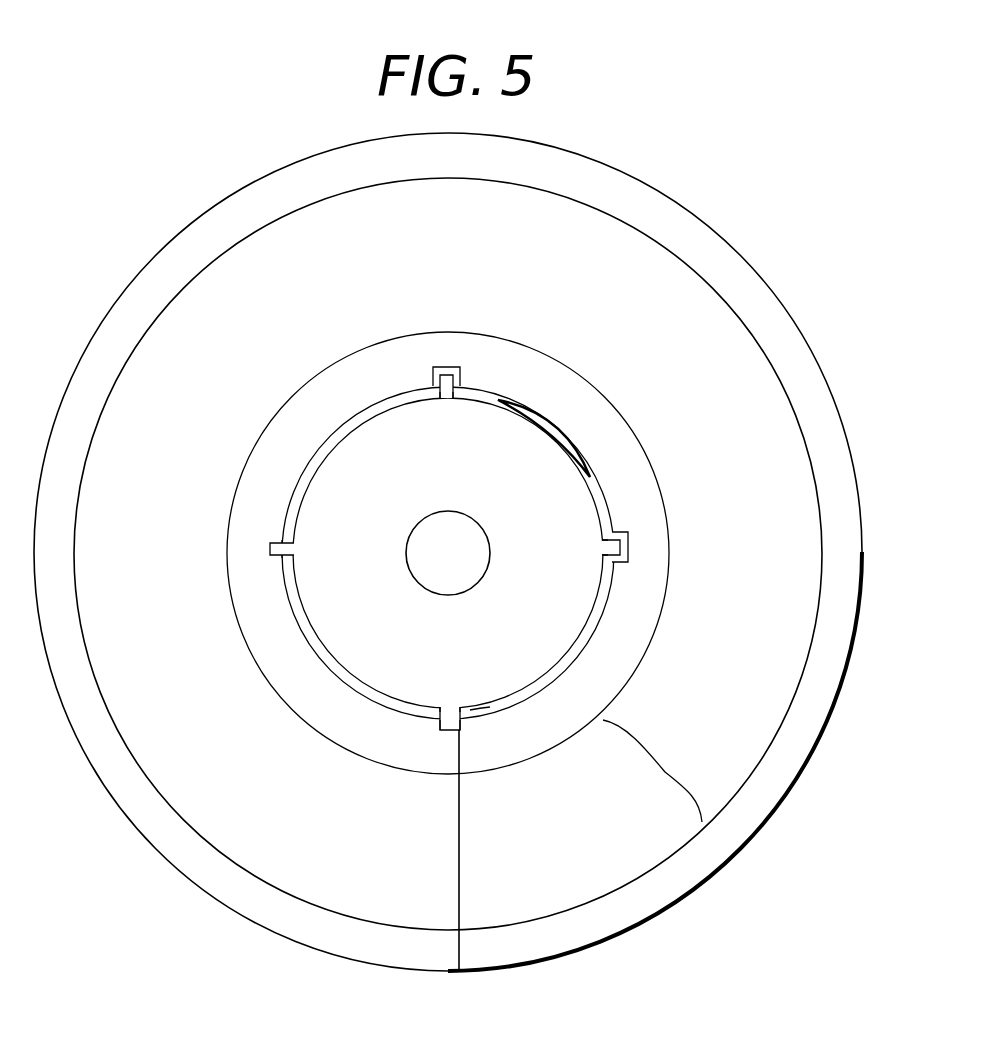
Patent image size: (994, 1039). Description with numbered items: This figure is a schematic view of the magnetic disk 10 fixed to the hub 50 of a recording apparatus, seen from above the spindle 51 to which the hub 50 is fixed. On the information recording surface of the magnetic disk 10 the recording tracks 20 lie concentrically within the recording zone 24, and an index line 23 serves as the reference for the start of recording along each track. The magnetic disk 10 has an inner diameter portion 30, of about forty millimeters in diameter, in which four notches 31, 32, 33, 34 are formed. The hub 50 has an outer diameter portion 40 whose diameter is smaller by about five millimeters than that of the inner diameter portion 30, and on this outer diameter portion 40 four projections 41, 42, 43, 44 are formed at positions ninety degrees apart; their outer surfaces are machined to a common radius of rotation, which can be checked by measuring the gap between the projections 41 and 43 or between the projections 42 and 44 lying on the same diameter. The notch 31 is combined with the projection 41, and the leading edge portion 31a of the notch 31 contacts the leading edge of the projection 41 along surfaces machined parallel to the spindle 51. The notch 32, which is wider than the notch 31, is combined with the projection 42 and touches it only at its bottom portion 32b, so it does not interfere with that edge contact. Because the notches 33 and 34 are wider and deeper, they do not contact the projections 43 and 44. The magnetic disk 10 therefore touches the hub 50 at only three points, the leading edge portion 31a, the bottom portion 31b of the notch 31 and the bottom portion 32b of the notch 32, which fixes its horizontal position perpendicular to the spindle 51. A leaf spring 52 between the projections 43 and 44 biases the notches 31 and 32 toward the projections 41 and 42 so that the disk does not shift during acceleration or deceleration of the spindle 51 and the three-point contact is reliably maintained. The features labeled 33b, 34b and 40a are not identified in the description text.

The magnetic disk 10 is at (775, 293).
The recording tracks 20 is at (596, 734).
The index line 23 is at (460, 958).
The recording zone 24 is at (653, 771).
The inner diameter portion 30 is at (327, 672).
The notch 31 is at (454, 754).
The leading edge portion 31a is at (463, 728).
The bottom portion 31b is at (448, 733).
The notch 32 is at (233, 549).
The bottom portion 32b is at (270, 558).
The notch 33 is at (451, 329).
The tab slot 33b is at (452, 367).
The notch 34 is at (668, 526).
The tab slot 34b is at (628, 550).
The outer diameter portion 40 is at (445, 553).
The ring portion 40a is at (475, 708).
The projection 41 is at (450, 710).
The projection 42 is at (290, 550).
The projection 43 is at (447, 395).
The projection 44 is at (605, 548).
The hub 50 is at (585, 622).
The spindle 51 is at (478, 577).
The leaf spring 52 is at (550, 420).